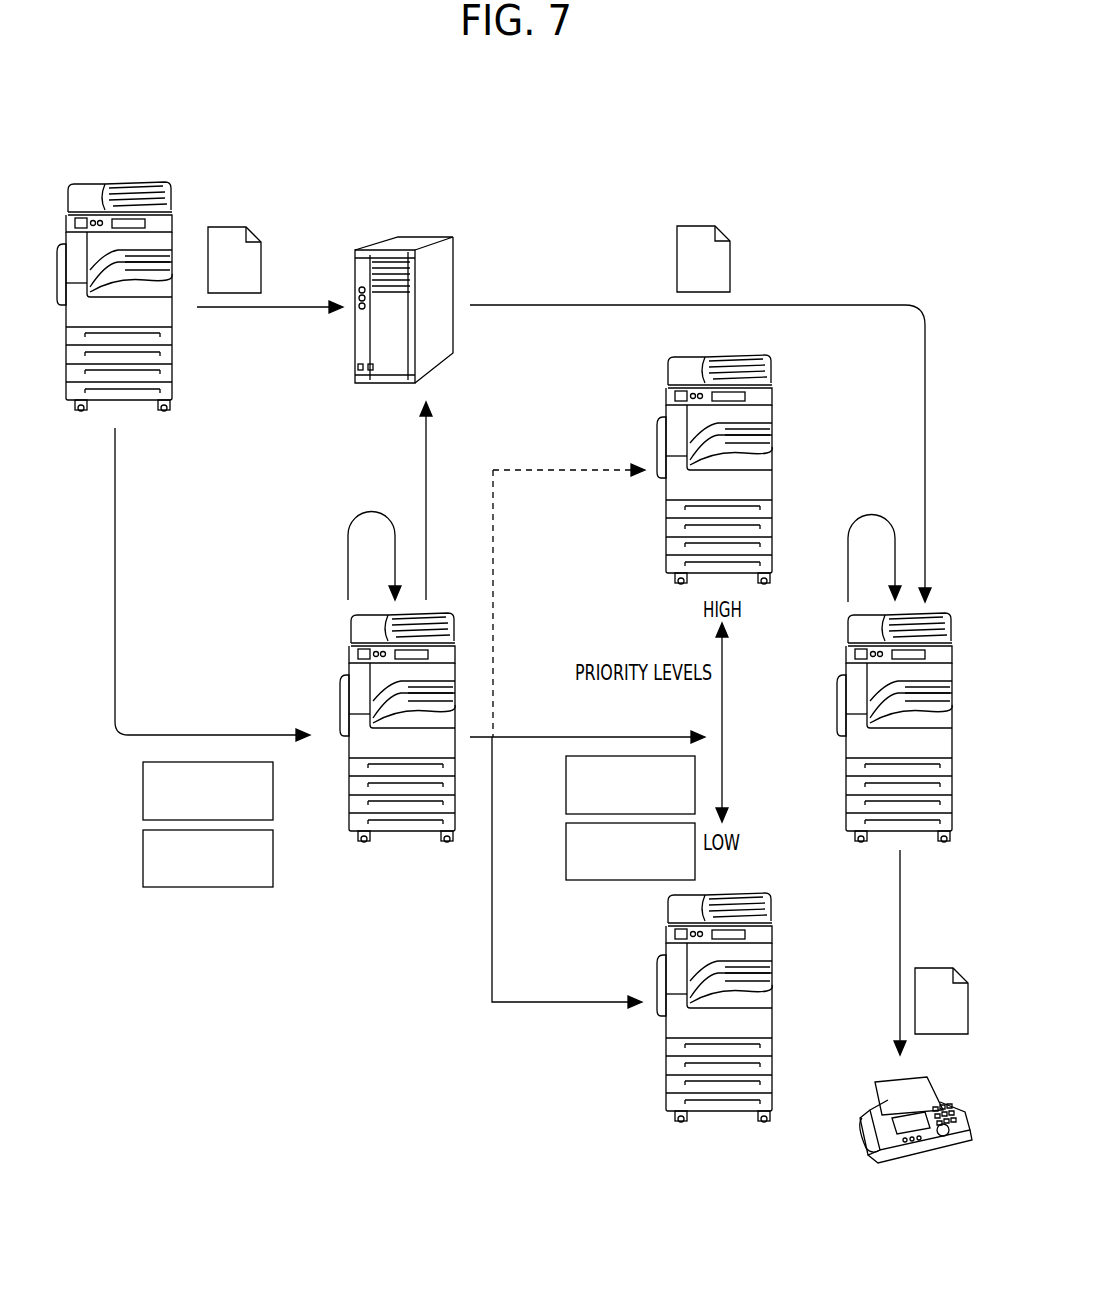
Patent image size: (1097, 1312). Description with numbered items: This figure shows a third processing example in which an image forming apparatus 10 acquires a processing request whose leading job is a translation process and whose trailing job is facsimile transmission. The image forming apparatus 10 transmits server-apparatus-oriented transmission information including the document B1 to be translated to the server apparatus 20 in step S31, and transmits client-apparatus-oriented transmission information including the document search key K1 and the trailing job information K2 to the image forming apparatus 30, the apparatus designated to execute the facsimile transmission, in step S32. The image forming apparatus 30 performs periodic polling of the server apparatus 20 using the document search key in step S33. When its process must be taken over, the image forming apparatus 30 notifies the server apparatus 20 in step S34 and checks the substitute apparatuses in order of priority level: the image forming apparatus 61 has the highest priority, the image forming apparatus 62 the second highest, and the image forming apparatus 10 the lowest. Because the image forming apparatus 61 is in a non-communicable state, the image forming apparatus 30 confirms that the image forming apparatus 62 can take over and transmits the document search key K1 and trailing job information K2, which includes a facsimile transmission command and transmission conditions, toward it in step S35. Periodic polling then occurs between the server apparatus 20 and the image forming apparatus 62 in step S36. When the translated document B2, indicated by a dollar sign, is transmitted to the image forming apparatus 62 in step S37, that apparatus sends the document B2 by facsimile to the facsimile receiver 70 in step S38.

The image forming apparatus 10 is at (122, 182).
The server apparatus 20 is at (455, 272).
The image forming apparatus 30 is at (345, 637).
The image forming apparatus 61 is at (775, 390).
The image forming apparatus 62 is at (945, 612).
The facsimile receiver 70 is at (865, 1148).
The document B1 is at (231, 227).
The document B2 is at (695, 226).
The document search key K1 is at (143, 790).
The trailing job information K2 is at (143, 857).
The step S31 is at (302, 305).
The step S32 is at (115, 605).
The step S33 is at (348, 553).
The step S34 is at (426, 442).
The step S35 is at (530, 737).
The step S36 is at (873, 512).
The step S37 is at (818, 305).
The step S38 is at (898, 965).